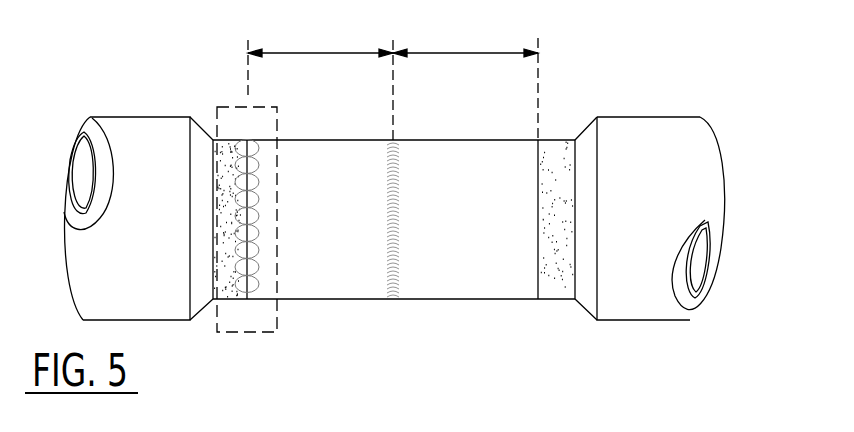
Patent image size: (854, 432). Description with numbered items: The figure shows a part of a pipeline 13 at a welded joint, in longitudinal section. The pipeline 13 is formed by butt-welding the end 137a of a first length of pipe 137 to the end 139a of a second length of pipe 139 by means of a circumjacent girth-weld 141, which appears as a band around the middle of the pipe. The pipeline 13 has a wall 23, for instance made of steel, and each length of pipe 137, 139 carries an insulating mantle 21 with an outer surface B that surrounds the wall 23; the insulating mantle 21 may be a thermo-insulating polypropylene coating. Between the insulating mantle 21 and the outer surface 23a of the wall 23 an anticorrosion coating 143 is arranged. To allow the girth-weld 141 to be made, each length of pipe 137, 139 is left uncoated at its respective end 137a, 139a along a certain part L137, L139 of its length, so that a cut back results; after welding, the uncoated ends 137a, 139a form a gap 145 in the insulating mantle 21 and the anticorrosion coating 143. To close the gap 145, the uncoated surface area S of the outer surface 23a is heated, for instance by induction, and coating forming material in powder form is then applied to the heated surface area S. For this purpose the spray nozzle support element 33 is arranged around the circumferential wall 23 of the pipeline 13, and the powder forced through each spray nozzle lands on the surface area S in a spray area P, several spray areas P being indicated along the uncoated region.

The pipeline 13 is at (555, 92).
The insulating mantle 21 is at (82, 133).
The wall 23 is at (708, 285).
The outer surface of the wall 23a is at (518, 158).
The spray nozzle support element 33 is at (238, 107).
The first length of pipe 137 is at (202, 327).
The end of the first length of pipe 137a is at (360, 313).
The second length of pipe 139 is at (588, 342).
The end of the second length of pipe 139a is at (422, 307).
The circumjacent girth-weld 141 is at (396, 165).
The anticorrosion coating 143 is at (557, 288).
The gap 145 is at (217, 62).
The outer surface of the insulating mantle B is at (140, 143).
The spray area P is at (253, 165).
The uncoated surface area S is at (363, 153).
The uncoated part of the first length of pipe L137 is at (320, 58).
The uncoated part of the second length of pipe L139 is at (465, 80).